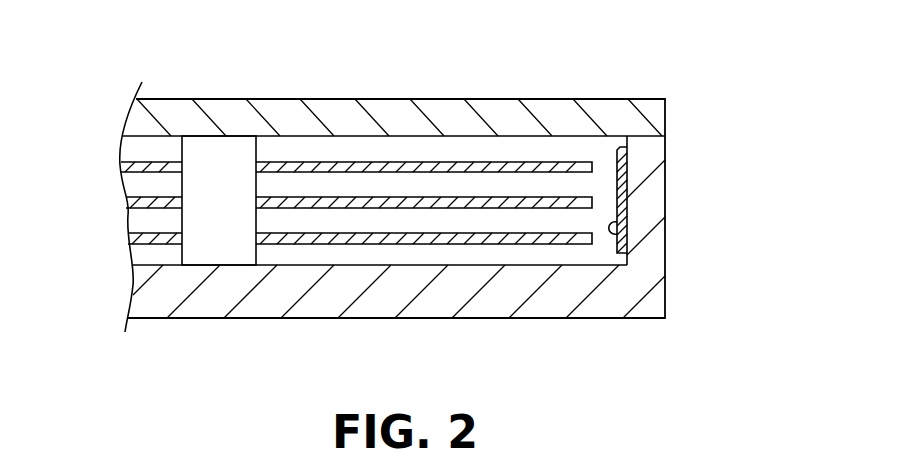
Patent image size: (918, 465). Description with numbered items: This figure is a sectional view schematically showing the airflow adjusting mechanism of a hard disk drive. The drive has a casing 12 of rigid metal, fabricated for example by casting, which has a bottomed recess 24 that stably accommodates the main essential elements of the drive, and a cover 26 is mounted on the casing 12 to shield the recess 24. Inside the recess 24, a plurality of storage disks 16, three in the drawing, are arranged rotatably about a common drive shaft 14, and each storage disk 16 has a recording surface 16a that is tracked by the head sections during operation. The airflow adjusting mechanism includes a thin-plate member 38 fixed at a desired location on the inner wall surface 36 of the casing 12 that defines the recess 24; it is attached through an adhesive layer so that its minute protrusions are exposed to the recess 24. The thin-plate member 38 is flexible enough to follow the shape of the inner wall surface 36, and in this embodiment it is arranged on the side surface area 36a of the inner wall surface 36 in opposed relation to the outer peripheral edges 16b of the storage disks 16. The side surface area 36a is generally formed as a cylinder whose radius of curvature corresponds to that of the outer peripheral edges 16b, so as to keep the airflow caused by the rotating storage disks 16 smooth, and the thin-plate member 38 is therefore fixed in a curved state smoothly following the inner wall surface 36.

The casing 12 is at (665, 270).
The common drive shaft 14 is at (215, 157).
The storage disks 16 is at (426, 198).
The recording surface 16a is at (481, 160).
The outer peripheral edges 16b is at (593, 203).
The bottomed recess 24 is at (371, 264).
The cover 26 is at (340, 113).
The inner wall surface 36 is at (536, 264).
The side surface area 36a is at (617, 222).
The thin-plate member 38 is at (612, 187).